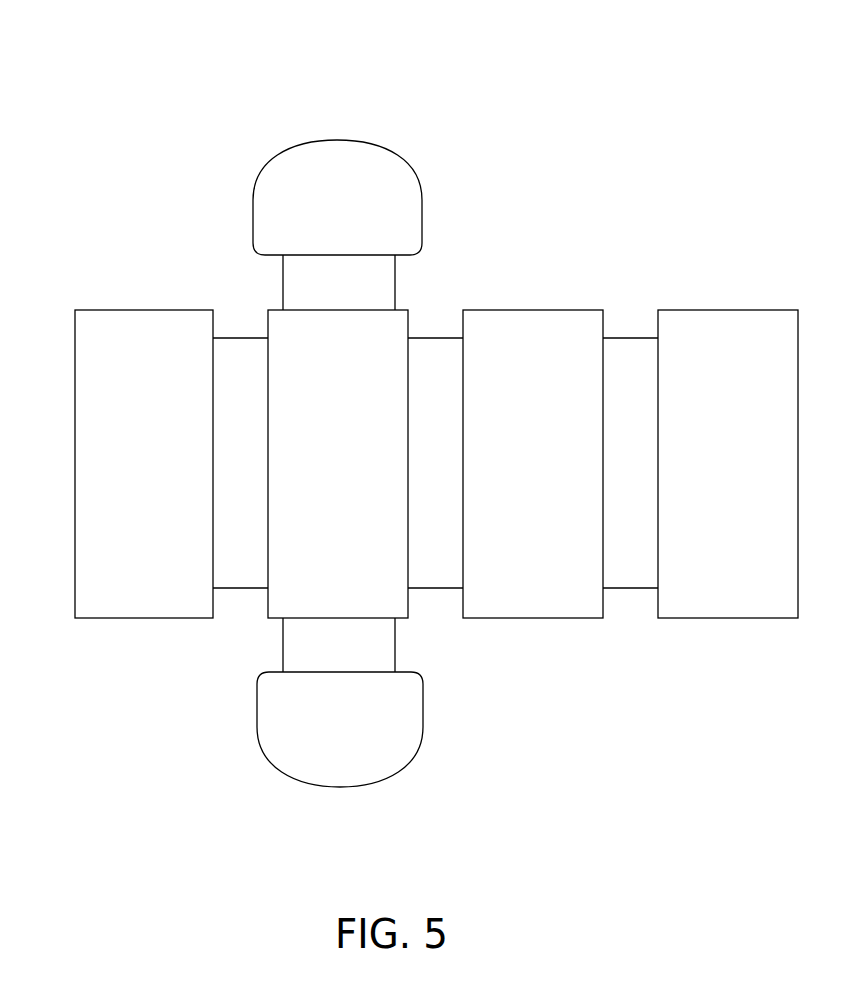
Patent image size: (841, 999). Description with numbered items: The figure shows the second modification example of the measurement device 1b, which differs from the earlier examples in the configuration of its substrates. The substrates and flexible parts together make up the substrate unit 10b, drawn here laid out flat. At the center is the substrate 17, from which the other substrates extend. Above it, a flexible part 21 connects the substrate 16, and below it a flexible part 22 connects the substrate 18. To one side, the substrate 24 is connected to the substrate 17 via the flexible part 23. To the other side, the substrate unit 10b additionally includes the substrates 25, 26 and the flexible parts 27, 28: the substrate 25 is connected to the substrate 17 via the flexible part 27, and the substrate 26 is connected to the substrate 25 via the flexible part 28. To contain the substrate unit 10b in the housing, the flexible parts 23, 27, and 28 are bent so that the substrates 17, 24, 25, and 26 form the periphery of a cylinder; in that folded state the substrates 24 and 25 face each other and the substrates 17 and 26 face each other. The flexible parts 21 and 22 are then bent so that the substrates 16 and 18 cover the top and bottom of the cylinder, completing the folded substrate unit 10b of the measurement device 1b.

The measurement device 1b is at (687, 63).
The substrate unit 10b is at (322, 140).
The substrate 16 is at (387, 198).
The substrate 17 is at (377, 323).
The substrate 18 is at (408, 737).
The flexible part 21 is at (387, 282).
The flexible part 22 is at (295, 648).
The flexible part 23 is at (242, 338).
The substrate 24 is at (107, 348).
The substrate 25 is at (580, 343).
The substrate 26 is at (748, 343).
The flexible part 27 is at (438, 552).
The flexible part 28 is at (630, 565).